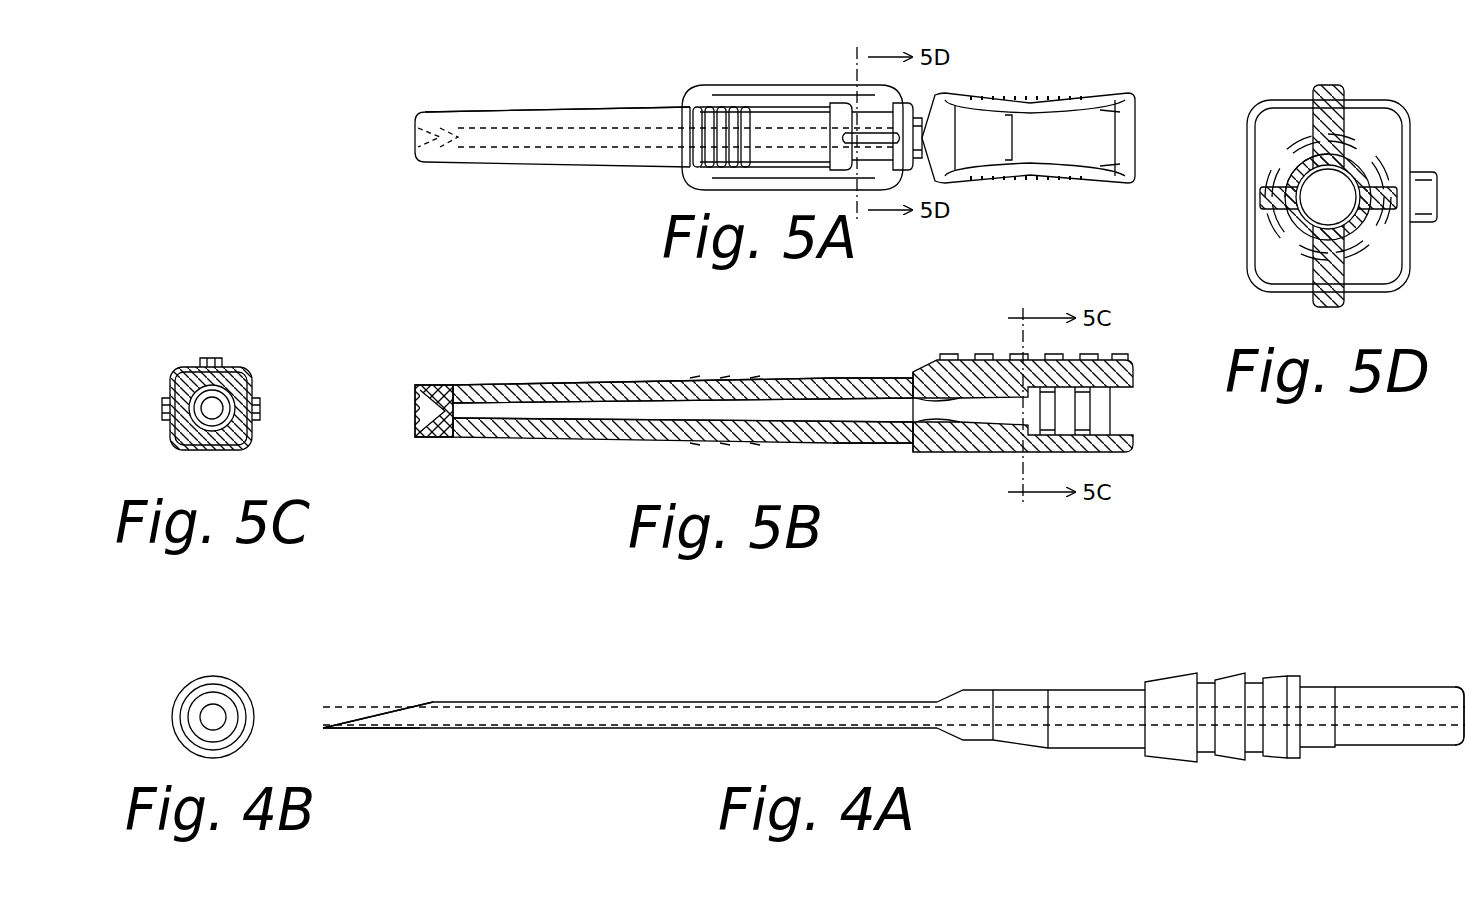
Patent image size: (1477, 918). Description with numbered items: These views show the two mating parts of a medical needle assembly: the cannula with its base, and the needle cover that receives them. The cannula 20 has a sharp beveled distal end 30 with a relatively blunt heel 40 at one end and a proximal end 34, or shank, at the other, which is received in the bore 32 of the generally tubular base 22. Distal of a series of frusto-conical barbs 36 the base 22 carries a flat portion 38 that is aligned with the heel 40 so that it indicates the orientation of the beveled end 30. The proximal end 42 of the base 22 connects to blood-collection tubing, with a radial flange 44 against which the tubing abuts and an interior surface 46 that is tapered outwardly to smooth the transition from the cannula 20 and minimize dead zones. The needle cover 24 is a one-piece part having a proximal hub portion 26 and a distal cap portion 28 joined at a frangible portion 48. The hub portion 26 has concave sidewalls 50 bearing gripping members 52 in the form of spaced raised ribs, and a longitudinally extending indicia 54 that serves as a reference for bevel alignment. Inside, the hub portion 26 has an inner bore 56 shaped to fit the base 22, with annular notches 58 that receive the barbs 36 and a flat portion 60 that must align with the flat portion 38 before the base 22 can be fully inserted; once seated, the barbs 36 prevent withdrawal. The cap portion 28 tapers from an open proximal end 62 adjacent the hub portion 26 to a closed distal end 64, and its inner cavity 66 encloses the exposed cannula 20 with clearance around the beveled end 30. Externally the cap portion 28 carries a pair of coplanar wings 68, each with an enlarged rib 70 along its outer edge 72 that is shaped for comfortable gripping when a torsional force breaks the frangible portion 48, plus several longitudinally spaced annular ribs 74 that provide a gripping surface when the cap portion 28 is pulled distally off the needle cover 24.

In FIG. 4B, the cannula 20 is at (230, 704).
In FIG. 4A, the cannula 20 is at (455, 730).
In FIG. 4B, the base 22 is at (250, 702).
In FIG. 4A, the base 22 is at (1005, 693).
In FIG. 5A, the needle cover 24 is at (540, 178).
In FIG. 5B, the needle cover 24 is at (540, 450).
In FIG. 5A, the hub portion 26 is at (940, 180).
In FIG. 5D, the hub portion 26 is at (1395, 255).
In FIG. 5C, the hub portion 26 is at (175, 447).
In FIG. 5A, the cap portion 28 is at (445, 110).
In FIG. 5D, the cap portion 28 is at (1290, 160).
In FIG. 5B, the cap portion 28 is at (447, 384).
In FIG. 4A, the beveled distal end 30 is at (365, 730).
In FIG. 4A, the bore 32 is at (1117, 704).
In FIG. 4A, the proximal end 34 is at (1110, 720).
In FIG. 4A, the barbs 36 is at (1233, 745).
In FIG. 4B, the flat portion 38 is at (207, 690).
In FIG. 4A, the flat portion 38 is at (1082, 690).
In FIG. 4A, the heel 40 is at (433, 702).
In FIG. 4A, the proximal end 42 is at (1388, 690).
In FIG. 4A, the radial flange 44 is at (1318, 748).
In FIG. 4A, the interior surface 46 is at (1460, 732).
In FIG. 5A, the frangible portion 48 is at (925, 115).
In FIG. 5B, the frangible portion 48 is at (913, 450).
In FIG. 5A, the concave sidewalls 50 is at (1075, 176).
In FIG. 5A, the gripping members 52 is at (1025, 180).
In FIG. 5A, the indicia 54 is at (1010, 118).
In FIG. 5D, the indicia 54 is at (1430, 178).
In FIG. 5C, the indicia 54 is at (212, 356).
In FIG. 5B, the indicia 54 is at (990, 358).
In FIG. 5A, the inner bore 56 is at (1120, 110).
In FIG. 5C, the inner bore 56 is at (234, 412).
In FIG. 5B, the inner bore 56 is at (966, 422).
In FIG. 5B, the annular notches 58 is at (1085, 415).
In FIG. 5C, the flat portion 60 is at (218, 400).
In FIG. 5B, the flat portion 60 is at (945, 404).
In FIG. 5B, the open proximal end 62 is at (860, 377).
In FIG. 5A, the closed distal end 64 is at (415, 136).
In FIG. 5B, the closed distal end 64 is at (415, 405).
In FIG. 5A, the inner cavity 66 is at (485, 152).
In FIG. 5B, the inner cavity 66 is at (485, 412).
In FIG. 5A, the wings 68 is at (775, 98).
In FIG. 5D, the wings 68 is at (1345, 170).
In FIG. 5A, the enlarged rib 70 is at (760, 95).
In FIG. 5D, the enlarged rib 70 is at (1345, 120).
In FIG. 5A, the outer edge 72 is at (700, 106).
In FIG. 5D, the outer edge 72 is at (1325, 86).
In FIG. 5A, the annular ribs 74 is at (690, 135).
In FIG. 5B, the annular ribs 74 is at (700, 377).